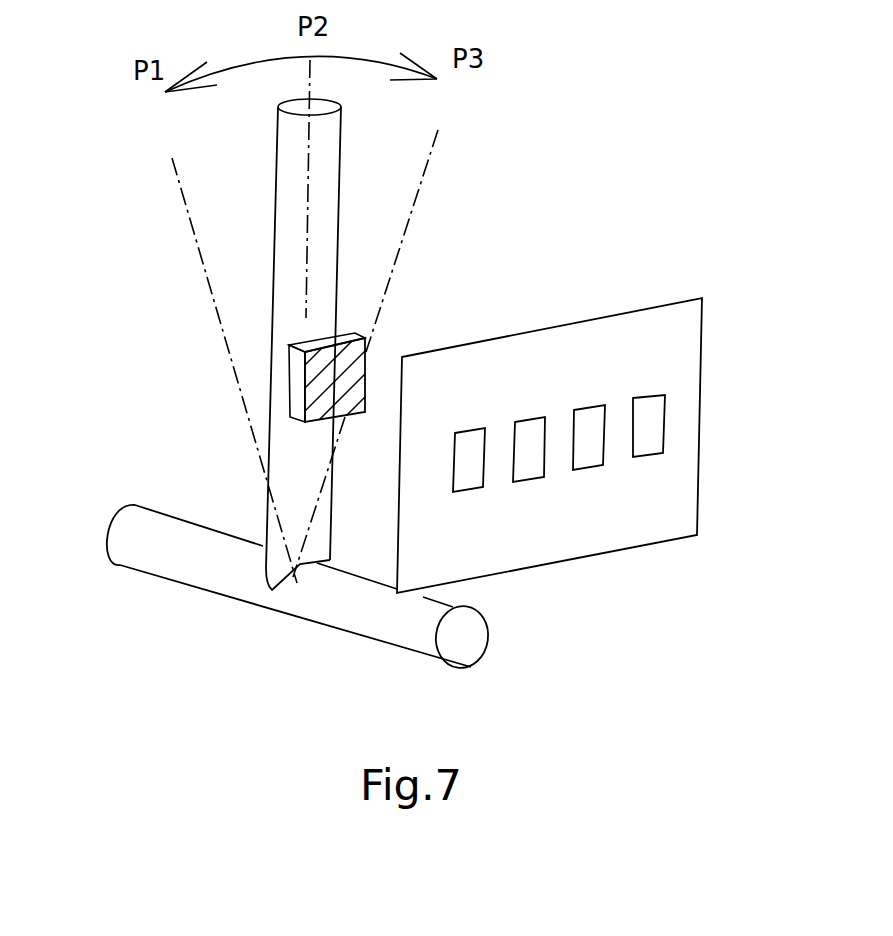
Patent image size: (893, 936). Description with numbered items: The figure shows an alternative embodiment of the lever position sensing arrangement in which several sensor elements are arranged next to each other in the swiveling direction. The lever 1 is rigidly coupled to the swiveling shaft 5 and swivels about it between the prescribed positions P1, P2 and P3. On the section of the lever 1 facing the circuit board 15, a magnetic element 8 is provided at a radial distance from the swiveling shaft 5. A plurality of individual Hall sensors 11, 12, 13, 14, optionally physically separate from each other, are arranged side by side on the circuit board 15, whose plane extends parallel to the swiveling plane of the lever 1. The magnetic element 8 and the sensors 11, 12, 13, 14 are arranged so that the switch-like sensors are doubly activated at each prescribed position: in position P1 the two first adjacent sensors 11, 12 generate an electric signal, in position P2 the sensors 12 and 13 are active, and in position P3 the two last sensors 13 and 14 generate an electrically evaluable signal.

The lever 1 is at (298, 215).
The swiveling shaft 5 is at (183, 550).
The magnetic element 8 is at (317, 388).
The sensor element 11 is at (472, 457).
The sensor element 12 is at (527, 448).
The sensor element 13 is at (592, 440).
The sensor element 14 is at (650, 440).
The circuit board 15 is at (673, 345).